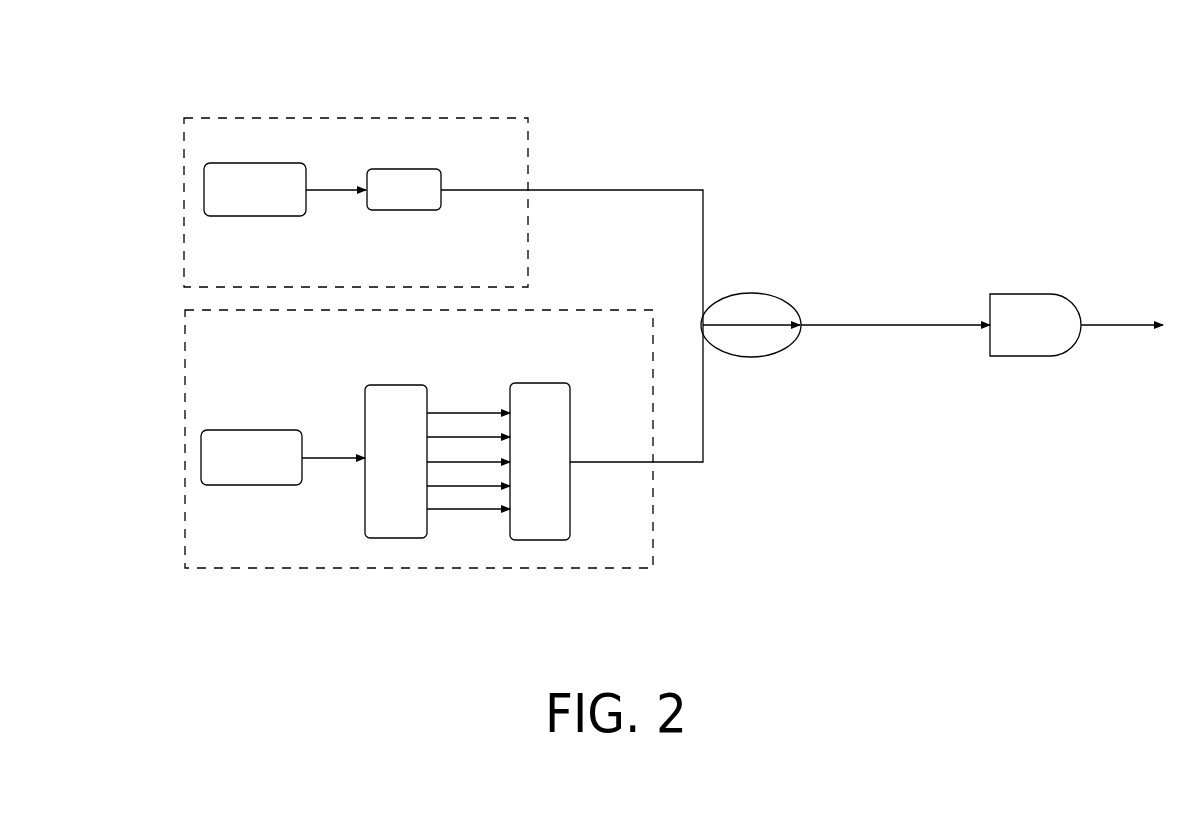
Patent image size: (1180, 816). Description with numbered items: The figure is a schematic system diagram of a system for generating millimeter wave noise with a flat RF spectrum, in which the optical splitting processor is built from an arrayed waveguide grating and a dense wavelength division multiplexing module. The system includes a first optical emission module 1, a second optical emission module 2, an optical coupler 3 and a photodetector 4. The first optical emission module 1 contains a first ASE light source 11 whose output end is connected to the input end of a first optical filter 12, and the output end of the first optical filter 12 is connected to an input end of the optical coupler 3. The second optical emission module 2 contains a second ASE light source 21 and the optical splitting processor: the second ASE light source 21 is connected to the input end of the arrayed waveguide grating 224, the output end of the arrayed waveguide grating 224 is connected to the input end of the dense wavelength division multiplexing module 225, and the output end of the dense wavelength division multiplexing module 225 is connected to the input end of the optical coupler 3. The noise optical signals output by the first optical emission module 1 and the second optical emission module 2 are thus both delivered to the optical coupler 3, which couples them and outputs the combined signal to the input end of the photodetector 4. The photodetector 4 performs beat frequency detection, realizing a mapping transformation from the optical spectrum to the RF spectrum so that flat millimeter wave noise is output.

The first optical emission module 1 is at (183, 118).
The first ASE light source 11 is at (263, 217).
The first optical filter 12 is at (407, 212).
The second optical emission module 2 is at (183, 310).
The second ASE light source 21 is at (253, 485).
The arrayed waveguide grating 224 is at (403, 383).
The dense wavelength division multiplexing module 225 is at (547, 382).
The optical coupler 3 is at (857, 290).
The photodetector 4 is at (1033, 293).